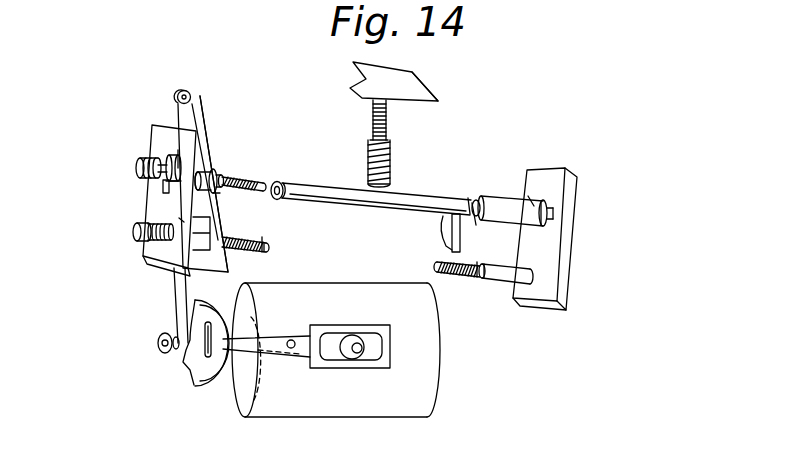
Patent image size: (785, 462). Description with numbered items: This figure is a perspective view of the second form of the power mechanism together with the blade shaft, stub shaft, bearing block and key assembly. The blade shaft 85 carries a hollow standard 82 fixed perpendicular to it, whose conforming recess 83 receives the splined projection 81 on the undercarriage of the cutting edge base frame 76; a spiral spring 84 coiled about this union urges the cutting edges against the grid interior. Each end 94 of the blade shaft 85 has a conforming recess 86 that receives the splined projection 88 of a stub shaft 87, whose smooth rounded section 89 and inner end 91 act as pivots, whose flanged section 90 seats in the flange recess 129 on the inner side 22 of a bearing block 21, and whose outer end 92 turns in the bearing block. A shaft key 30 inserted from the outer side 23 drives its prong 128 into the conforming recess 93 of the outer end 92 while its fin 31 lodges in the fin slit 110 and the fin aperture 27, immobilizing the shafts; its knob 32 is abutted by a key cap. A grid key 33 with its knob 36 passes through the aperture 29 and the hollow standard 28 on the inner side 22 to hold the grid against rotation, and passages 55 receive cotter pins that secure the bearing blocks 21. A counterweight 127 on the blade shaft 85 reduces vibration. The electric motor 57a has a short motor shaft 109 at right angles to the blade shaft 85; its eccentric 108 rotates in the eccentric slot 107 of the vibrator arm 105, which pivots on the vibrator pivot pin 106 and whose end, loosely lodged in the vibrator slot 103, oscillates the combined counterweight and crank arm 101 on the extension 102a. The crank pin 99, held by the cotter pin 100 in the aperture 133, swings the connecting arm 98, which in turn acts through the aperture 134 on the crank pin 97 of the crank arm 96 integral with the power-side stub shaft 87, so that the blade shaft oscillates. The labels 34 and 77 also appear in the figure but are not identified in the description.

The bearing block 21 is at (340, 210).
The inner side 22 is at (547, 259).
The outer side 23 is at (177, 258).
The fin aperture 27 is at (165, 184).
The hollow standard 28 is at (197, 240).
The aperture 29 is at (173, 218).
The shaft key 30 is at (134, 153).
The fin 31 is at (175, 195).
The knob 32 is at (138, 163).
The grid key 33 is at (279, 250).
The pin collar 34 is at (265, 239).
The knob 36 is at (133, 229).
The passage 55 is at (160, 264).
The electric motor 57a is at (420, 410).
The cutting edge base frame 76 is at (432, 84).
The lever 77 is at (402, 93).
The splined projection 81 is at (388, 128).
The hollow standard 82 is at (368, 158).
The conforming recess 83 is at (373, 138).
The spiral spring 84 is at (389, 160).
The blade shaft 85 is at (376, 197).
The conforming recess 86 is at (278, 181).
The stub shaft 87 is at (203, 167).
The splined projection 88 is at (237, 189).
The smooth rounded section 89 is at (223, 172).
The flanged section 90 is at (548, 212).
The inner end 91 is at (216, 195).
The outer end 92 is at (178, 162).
The conforming recess 93 is at (187, 134).
The end 94 is at (283, 196).
The crank arm 96 is at (199, 127).
The crank pin 97 is at (192, 97).
The connecting arm 98 is at (175, 300).
The crank pin 99 is at (178, 358).
The cotter pin 100 is at (158, 340).
The combined counterweight and crank arm 101 is at (206, 356).
The extension 102a is at (253, 378).
The vibrator slot 103 is at (213, 320).
The vibrator arm 105 is at (305, 340).
The vibrator pivot pin 106 is at (292, 349).
The eccentric slot 107 is at (372, 339).
The eccentric 108 is at (346, 336).
The motor shaft 109 is at (360, 354).
The fin slit 110 is at (170, 178).
The counterweight 127 is at (446, 228).
The prong 128 is at (160, 177).
The flange recess 129 is at (549, 226).
The aperture 133 is at (161, 353).
The aperture 134 is at (179, 95).